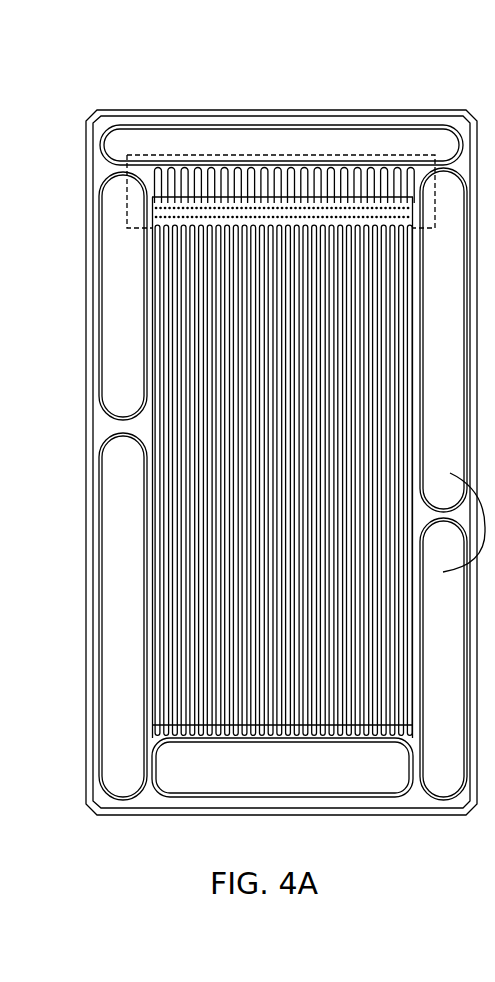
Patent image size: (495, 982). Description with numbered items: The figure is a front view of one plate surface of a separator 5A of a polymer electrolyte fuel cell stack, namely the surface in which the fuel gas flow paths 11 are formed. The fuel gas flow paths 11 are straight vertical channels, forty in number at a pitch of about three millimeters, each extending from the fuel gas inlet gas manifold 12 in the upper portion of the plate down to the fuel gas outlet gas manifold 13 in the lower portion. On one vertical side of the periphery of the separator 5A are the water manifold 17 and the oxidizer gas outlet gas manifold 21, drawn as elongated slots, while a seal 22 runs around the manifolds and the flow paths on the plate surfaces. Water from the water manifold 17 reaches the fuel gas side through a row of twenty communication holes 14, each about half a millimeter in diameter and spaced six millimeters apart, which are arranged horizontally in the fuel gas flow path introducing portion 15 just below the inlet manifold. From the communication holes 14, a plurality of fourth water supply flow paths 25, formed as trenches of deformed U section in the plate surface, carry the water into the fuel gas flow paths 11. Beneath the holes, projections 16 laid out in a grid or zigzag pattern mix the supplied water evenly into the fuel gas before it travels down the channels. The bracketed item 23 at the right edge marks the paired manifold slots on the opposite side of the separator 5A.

The separator 5A is at (88, 426).
The fuel gas flow paths 11 is at (258, 250).
The fuel gas inlet gas manifold 12 is at (425, 138).
The fuel gas outlet gas manifold 13 is at (380, 787).
The communication holes 14 is at (387, 63).
The fuel gas flow path introducing portion 15 is at (117, 218).
The projections 16 is at (157, 214).
The water manifold 17 is at (110, 342).
The oxidizer gas outlet gas manifold 21 is at (110, 645).
The seal 22 is at (415, 800).
The right manifold slots 23 is at (492, 527).
The fourth water supply flow paths 25 is at (360, 78).